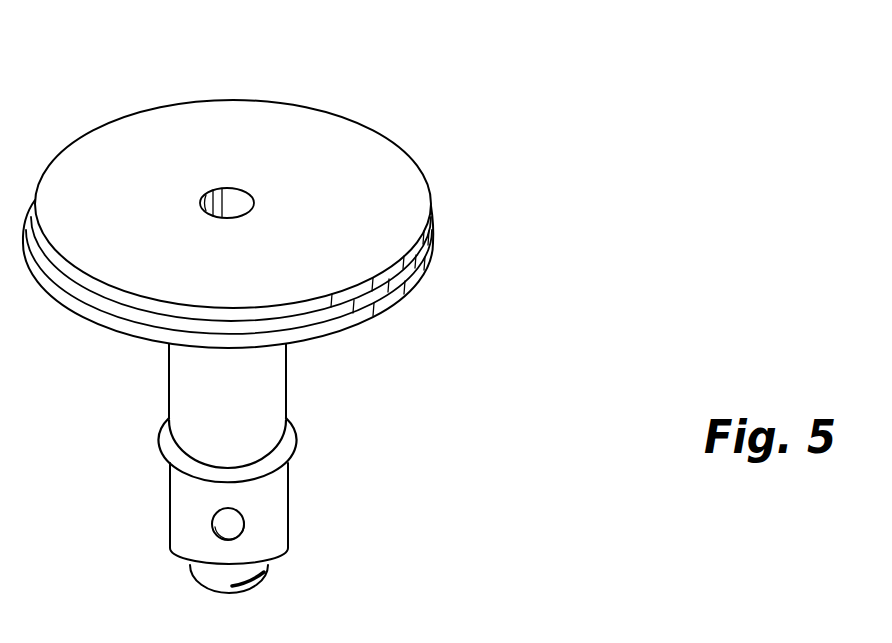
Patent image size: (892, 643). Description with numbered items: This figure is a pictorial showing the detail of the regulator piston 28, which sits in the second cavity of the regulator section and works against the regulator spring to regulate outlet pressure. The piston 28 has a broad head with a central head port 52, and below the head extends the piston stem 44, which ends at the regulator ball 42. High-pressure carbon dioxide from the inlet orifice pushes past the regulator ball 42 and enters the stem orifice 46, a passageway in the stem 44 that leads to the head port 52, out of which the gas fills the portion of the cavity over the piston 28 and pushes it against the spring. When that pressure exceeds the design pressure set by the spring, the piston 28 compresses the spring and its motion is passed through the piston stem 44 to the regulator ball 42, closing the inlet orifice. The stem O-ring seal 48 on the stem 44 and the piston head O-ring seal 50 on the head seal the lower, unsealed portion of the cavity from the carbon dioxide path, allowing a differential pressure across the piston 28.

The regulator piston 28 is at (390, 151).
The piston head O-ring seal 50 is at (430, 245).
The head port 52 is at (213, 188).
The stem O-ring seal 48 is at (297, 443).
The piston stem 44 is at (288, 487).
The stem orifice 46 is at (213, 518).
The regulator ball 42 is at (267, 580).